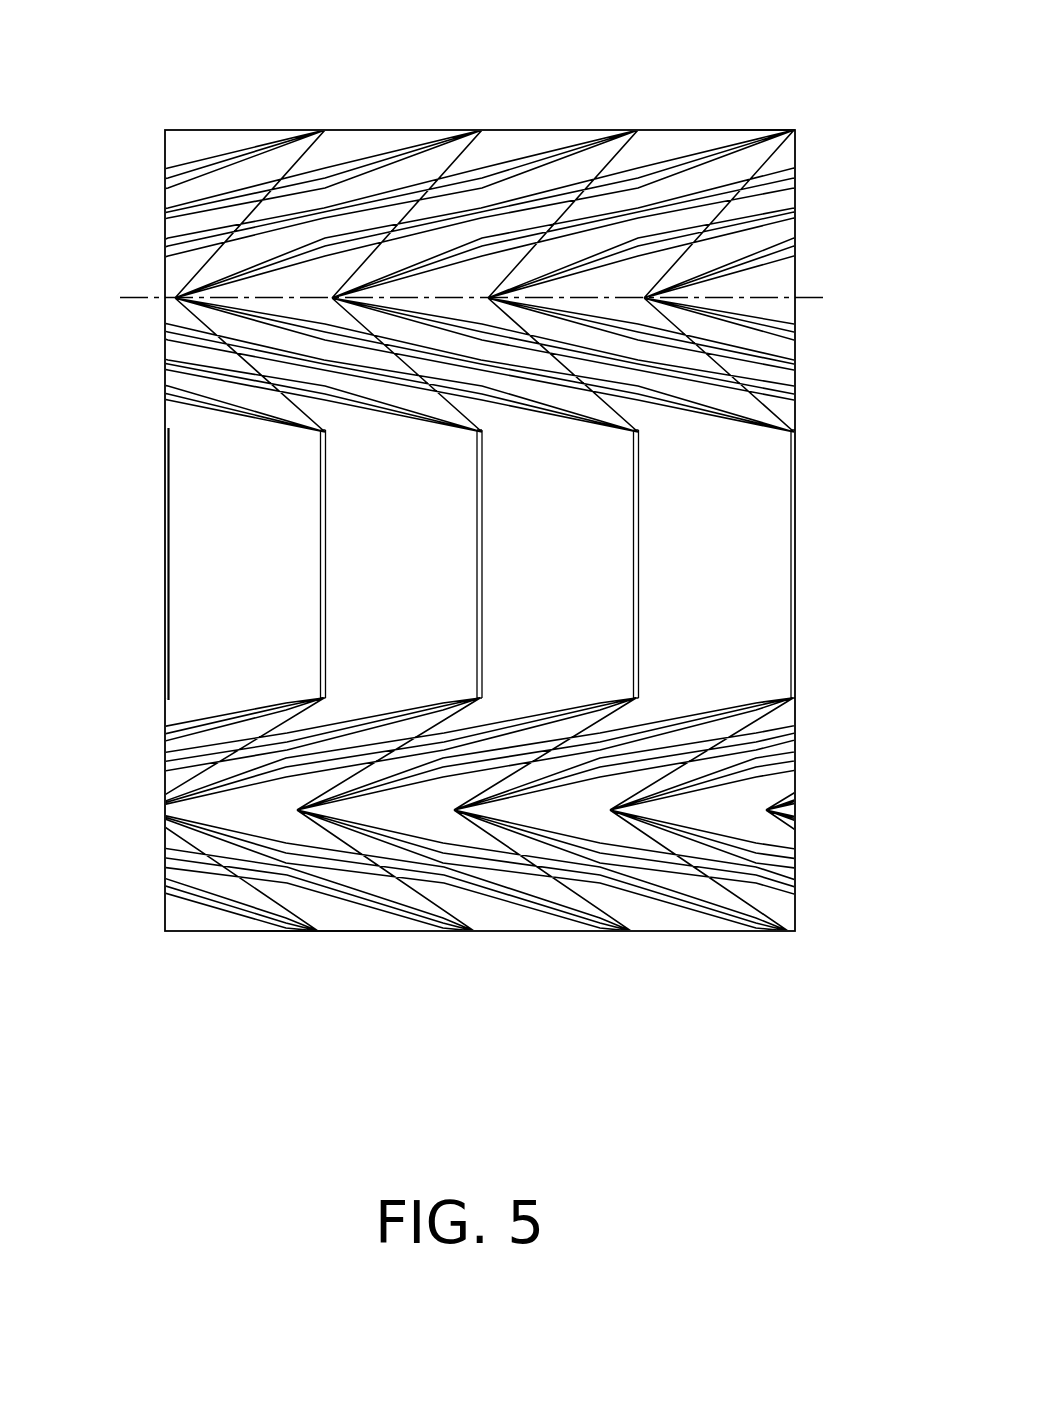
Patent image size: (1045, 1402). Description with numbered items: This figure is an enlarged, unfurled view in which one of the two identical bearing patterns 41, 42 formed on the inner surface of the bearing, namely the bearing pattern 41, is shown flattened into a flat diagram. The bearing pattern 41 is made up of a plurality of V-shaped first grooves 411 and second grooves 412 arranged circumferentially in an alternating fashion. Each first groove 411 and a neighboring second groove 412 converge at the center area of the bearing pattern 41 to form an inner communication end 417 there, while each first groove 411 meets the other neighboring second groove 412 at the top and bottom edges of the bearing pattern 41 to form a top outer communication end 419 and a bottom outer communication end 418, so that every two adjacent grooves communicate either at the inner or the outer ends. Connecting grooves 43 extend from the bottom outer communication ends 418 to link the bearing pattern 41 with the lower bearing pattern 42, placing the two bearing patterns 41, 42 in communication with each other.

The bearing pattern 41 is at (522, 317).
The bearing pattern 42 is at (820, 690).
The connecting groove 43 is at (320, 545).
The first groove 411 is at (632, 220).
The second groove 412 is at (588, 207).
The inner communication end 417 is at (332, 297).
The bottom outer communication end 418 is at (795, 432).
The top outer communication end 419 is at (318, 931).